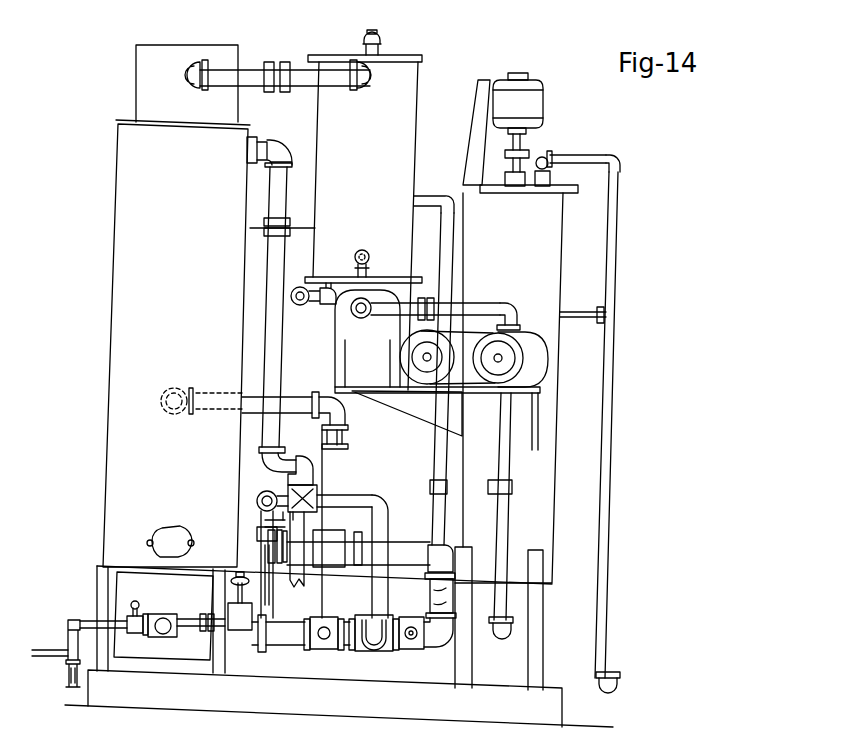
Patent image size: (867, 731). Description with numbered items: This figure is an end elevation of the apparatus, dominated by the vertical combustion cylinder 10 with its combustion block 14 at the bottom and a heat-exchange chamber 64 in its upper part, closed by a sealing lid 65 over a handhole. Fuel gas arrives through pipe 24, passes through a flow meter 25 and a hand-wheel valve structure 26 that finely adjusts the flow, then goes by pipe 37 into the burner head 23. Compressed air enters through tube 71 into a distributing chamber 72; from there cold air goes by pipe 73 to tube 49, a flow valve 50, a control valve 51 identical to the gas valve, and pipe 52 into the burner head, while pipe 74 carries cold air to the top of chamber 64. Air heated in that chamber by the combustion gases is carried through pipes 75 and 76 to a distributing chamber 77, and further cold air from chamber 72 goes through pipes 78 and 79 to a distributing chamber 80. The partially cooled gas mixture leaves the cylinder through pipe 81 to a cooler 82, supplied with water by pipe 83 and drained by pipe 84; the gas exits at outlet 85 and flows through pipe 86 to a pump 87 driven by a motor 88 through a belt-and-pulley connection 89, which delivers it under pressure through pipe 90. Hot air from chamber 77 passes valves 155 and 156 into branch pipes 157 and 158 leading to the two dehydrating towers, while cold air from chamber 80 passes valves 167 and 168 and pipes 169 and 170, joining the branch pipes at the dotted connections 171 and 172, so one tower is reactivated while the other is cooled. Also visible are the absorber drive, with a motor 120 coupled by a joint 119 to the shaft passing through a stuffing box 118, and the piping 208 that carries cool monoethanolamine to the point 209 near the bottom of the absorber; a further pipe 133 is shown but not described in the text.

The cylinder 10 is at (116, 322).
The combustion block 14 is at (96, 578).
The burner head 23 is at (165, 640).
The pipe 24 is at (42, 648).
The flow meter 25 is at (66, 676).
The valve structure 26 is at (126, 620).
The pipe 37 is at (150, 616).
The tube 49 is at (265, 506).
The flow valve 50 is at (266, 536).
The control valve 51 is at (238, 606).
The pipe 52 is at (192, 626).
The chamber 64 is at (145, 70).
The sealing lid 65 is at (162, 530).
The tube 71 is at (303, 585).
The distributing chamber 72 is at (318, 492).
The pipe 73 is at (268, 490).
The pipe 74 is at (268, 335).
The pipe 75 is at (300, 398).
The pipe 76 is at (329, 440).
The distributing chamber 77 is at (325, 556).
The pipe 78 is at (352, 506).
The pipe 79 is at (380, 592).
The distributing chamber 80 is at (366, 652).
The pipe 81 is at (247, 78).
The cooler 82 is at (415, 105).
The pipe 83 is at (308, 303).
The pipe 84 is at (383, 40).
The cooler outlet 85 is at (368, 275).
The pipe 86 is at (380, 318).
The pump 87 is at (520, 335).
The motor 88 is at (428, 372).
The belt-and-pulley connection 89 is at (471, 380).
The pipe 90 is at (513, 518).
The stuffing box 118 is at (521, 165).
The joint 119 is at (524, 150).
The motor 120 is at (540, 104).
The pipe 133 is at (599, 165).
The valve 155 is at (275, 524).
The valve 156 is at (368, 550).
The branch pipe 157 is at (258, 630).
The branch pipe 158 is at (432, 598).
The valve 167 is at (326, 652).
The valve 168 is at (408, 652).
The pipe 169 is at (262, 655).
The pipe 170 is at (440, 645).
The dotted-line connection 171 is at (270, 590).
The dotted-line connection 172 is at (432, 608).
The piping 208 is at (446, 195).
The point 209 is at (448, 560).